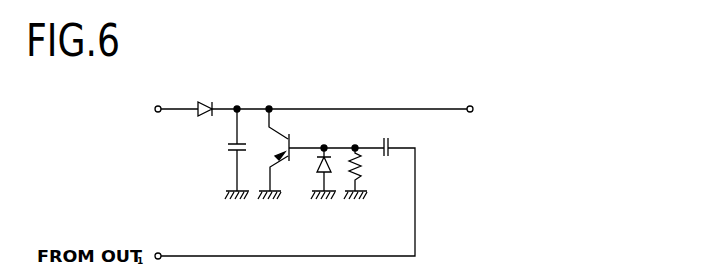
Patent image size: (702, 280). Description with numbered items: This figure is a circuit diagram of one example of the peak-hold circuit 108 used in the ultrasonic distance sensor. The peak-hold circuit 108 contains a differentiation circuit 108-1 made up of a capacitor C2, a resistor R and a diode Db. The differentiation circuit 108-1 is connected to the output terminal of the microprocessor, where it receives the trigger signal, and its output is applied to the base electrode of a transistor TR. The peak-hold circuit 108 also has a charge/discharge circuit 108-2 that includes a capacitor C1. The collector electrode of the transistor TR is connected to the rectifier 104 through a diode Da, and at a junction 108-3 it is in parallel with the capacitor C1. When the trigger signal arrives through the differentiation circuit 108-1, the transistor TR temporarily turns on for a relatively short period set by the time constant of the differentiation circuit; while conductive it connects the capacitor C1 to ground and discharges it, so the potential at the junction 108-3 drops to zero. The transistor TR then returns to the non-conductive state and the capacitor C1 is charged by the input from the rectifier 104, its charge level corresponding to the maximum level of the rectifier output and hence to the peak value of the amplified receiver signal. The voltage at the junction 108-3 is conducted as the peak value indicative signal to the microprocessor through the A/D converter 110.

The rectifier 104 is at (125, 110).
The A/D converter 110 is at (507, 110).
The peak-hold circuit 108 is at (217, 203).
The differentiation circuit 108-1 is at (345, 137).
The charge/discharge circuit 108-2 is at (233, 105).
The junction 108-3 is at (240, 106).
The diode Da is at (205, 100).
The diode Db is at (318, 176).
The capacitor C1 is at (227, 147).
The capacitor C2 is at (390, 135).
The transistor TR is at (278, 140).
The resistor R is at (360, 173).